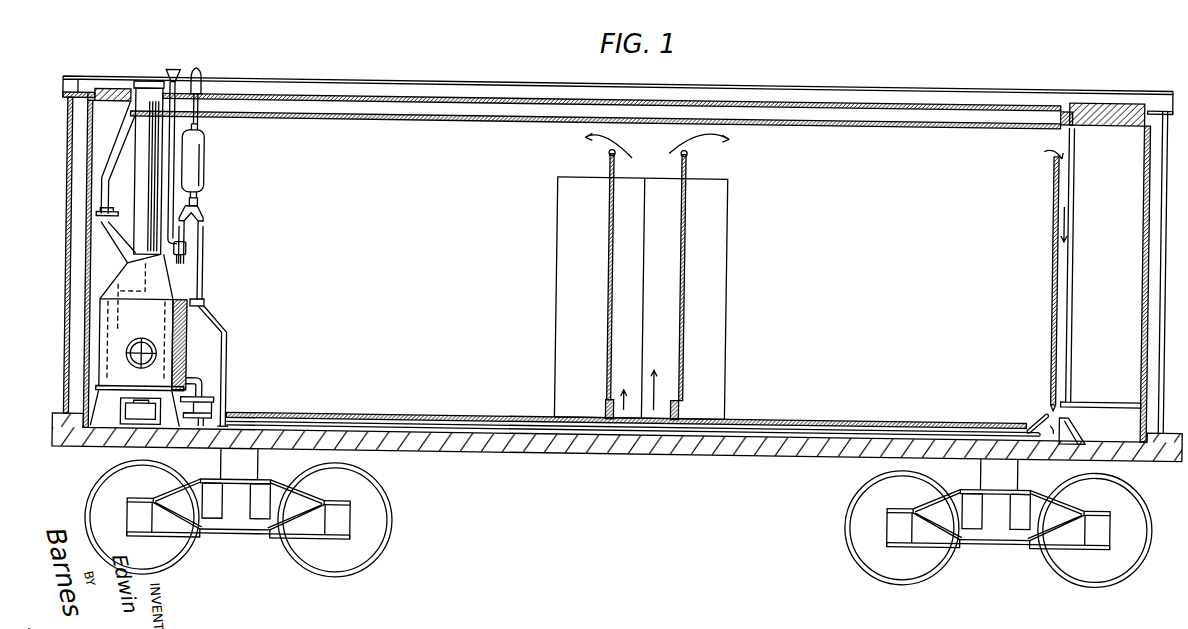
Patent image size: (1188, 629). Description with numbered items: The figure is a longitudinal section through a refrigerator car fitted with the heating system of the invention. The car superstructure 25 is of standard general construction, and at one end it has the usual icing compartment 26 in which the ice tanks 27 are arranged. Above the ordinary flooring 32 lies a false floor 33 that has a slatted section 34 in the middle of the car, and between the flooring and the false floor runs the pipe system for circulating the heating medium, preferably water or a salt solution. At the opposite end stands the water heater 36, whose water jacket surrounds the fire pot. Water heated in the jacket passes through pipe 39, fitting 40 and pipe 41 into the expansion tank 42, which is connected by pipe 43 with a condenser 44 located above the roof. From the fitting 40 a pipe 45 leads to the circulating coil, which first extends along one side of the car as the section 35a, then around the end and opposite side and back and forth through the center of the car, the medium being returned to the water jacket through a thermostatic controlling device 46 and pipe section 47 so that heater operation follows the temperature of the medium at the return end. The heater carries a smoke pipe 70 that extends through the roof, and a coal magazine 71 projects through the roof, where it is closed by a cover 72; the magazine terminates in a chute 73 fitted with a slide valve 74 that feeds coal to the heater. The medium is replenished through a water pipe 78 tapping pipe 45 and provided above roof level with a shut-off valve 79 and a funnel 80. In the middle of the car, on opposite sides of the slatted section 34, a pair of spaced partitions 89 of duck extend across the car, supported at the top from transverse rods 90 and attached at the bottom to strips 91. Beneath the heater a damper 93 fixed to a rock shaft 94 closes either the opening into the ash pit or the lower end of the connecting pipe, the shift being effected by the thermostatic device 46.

The superstructure 25 is at (1007, 96).
The icing compartment 26 is at (1053, 166).
The ice tanks 27 is at (1113, 277).
The flooring 32 is at (756, 440).
The false floor 33 is at (805, 412).
The slatted section 34 is at (650, 420).
The circulating coil side section 35a is at (567, 423).
The water heater 36 is at (188, 333).
The pipe 39 is at (203, 262).
The fitting 40 is at (201, 215).
The pipe 41 is at (196, 200).
The expansion tank 42 is at (197, 158).
The pipe 43 is at (197, 108).
The condenser 44 is at (199, 80).
The pipe 45 is at (186, 233).
The thermostatic controlling device 46 is at (216, 403).
The pipe section 47 is at (205, 384).
The smoke pipe 70 is at (140, 135).
The coal magazine 71 is at (100, 108).
The cover 72 is at (112, 88).
The chute 73 is at (97, 193).
The slide valve 74 is at (106, 210).
The water pipe 78 is at (151, 108).
The shut-off valve 79 is at (170, 97).
The funnel 80 is at (172, 68).
The partitions 89 is at (608, 242).
The transverse rods 90 is at (631, 152).
The strips 91 is at (607, 398).
The damper 93 is at (135, 410).
The rock shaft 94 is at (170, 410).